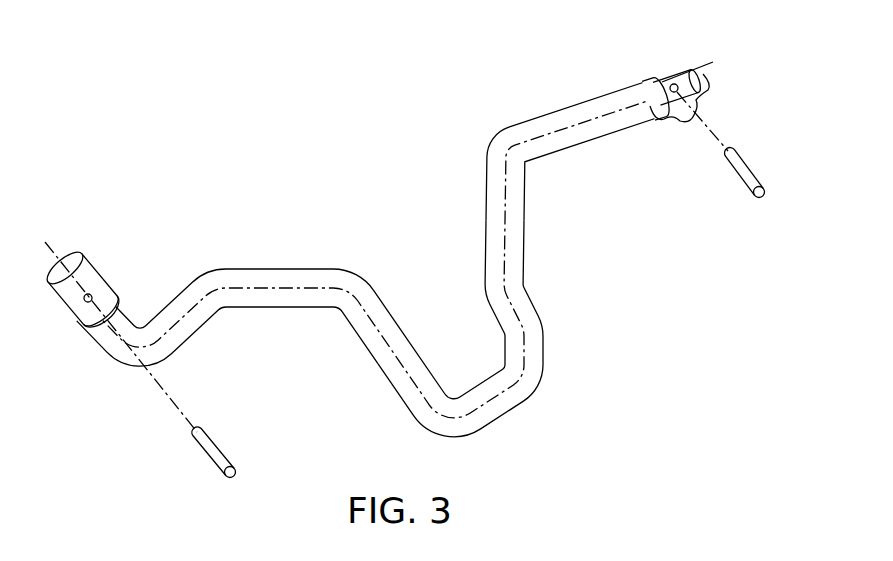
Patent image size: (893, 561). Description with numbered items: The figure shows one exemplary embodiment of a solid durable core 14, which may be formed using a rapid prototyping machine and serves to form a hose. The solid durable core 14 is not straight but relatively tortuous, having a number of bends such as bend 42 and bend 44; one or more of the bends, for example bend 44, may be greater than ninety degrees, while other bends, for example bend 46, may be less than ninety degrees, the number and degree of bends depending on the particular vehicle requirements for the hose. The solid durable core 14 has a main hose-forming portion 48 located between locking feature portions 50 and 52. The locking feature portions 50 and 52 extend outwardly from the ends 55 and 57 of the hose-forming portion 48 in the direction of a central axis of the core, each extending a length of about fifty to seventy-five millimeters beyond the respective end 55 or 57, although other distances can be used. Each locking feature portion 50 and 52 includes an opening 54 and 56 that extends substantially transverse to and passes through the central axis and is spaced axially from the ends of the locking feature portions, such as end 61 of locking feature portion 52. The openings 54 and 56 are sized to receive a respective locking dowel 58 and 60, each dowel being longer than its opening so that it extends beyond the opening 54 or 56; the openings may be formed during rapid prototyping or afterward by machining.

The solid durable core 14 is at (760, 108).
The bend 42 is at (505, 132).
The bend 44 is at (494, 424).
The bend 46 is at (209, 270).
The hose-forming portion 48 is at (370, 273).
The locking feature portion 50 is at (95, 250).
The locking feature portion 52 is at (678, 130).
The opening 54 is at (83, 300).
The end 55 is at (114, 297).
The opening 56 is at (673, 80).
The end 57 is at (641, 78).
The locking dowel 58 is at (221, 445).
The locking dowel 60 is at (754, 166).
The end 61 is at (707, 78).